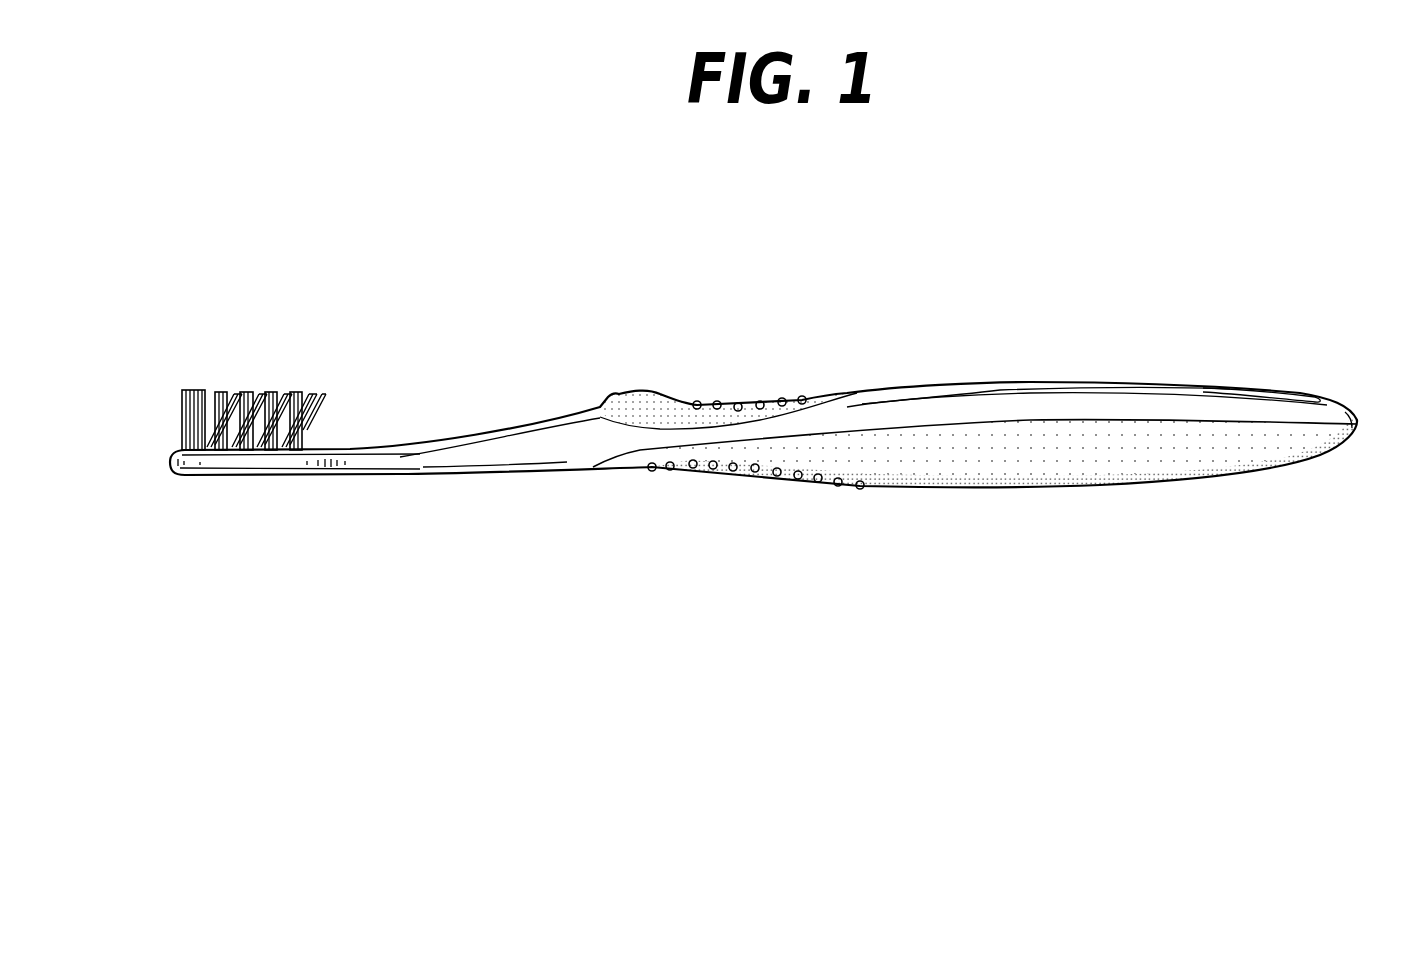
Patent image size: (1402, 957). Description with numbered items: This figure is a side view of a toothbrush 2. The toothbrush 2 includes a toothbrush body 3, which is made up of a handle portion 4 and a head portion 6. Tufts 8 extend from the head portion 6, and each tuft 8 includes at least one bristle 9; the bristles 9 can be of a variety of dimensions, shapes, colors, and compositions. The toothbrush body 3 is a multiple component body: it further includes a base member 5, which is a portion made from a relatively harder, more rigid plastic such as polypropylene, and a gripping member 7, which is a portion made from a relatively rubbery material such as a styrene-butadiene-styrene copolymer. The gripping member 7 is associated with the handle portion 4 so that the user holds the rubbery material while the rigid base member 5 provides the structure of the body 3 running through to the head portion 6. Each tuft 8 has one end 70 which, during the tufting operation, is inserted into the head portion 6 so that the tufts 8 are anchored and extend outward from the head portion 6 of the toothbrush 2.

The toothbrush 2 is at (709, 292).
The toothbrush body 3 is at (1019, 362).
The handle portion 4 is at (1019, 505).
The base member 5 is at (602, 437).
The head portion 6 is at (268, 500).
The gripping member 7 is at (730, 410).
The tufts 8 is at (313, 398).
The bristle 9 is at (272, 390).
The end of a tuft 70 is at (191, 388).